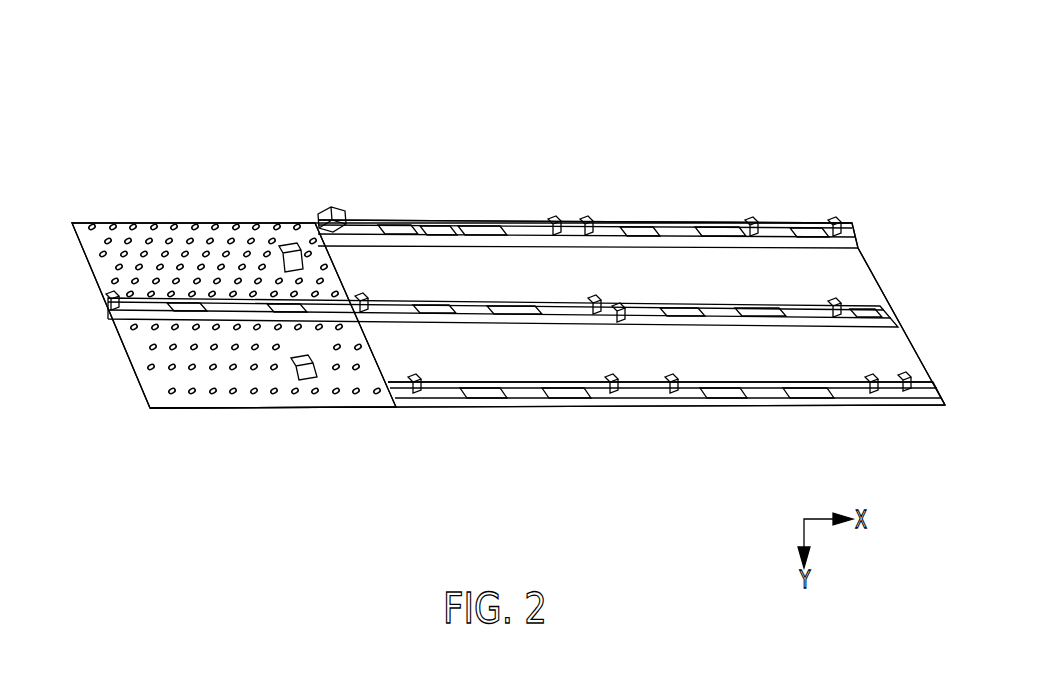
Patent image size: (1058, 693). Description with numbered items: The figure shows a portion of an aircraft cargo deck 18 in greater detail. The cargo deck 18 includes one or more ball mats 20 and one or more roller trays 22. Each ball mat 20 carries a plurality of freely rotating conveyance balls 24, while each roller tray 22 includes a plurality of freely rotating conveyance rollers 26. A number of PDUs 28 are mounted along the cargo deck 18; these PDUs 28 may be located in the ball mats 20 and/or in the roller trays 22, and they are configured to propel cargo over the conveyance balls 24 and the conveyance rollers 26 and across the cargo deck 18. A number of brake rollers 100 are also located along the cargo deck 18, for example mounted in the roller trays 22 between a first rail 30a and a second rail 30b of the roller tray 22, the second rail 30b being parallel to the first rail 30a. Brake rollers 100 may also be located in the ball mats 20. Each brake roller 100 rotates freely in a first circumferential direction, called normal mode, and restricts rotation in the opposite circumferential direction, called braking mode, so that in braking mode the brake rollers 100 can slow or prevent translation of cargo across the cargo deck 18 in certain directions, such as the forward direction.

The cargo deck 18 is at (262, 102).
The ball mat 20 is at (132, 258).
The roller tray 22 is at (761, 212).
The conveyance ball 24 is at (192, 237).
The conveyance roller 26 is at (827, 406).
The PDU 28 is at (282, 243).
The first rail 30a is at (858, 222).
The second rail 30b is at (863, 250).
The brake roller 100 is at (347, 221).